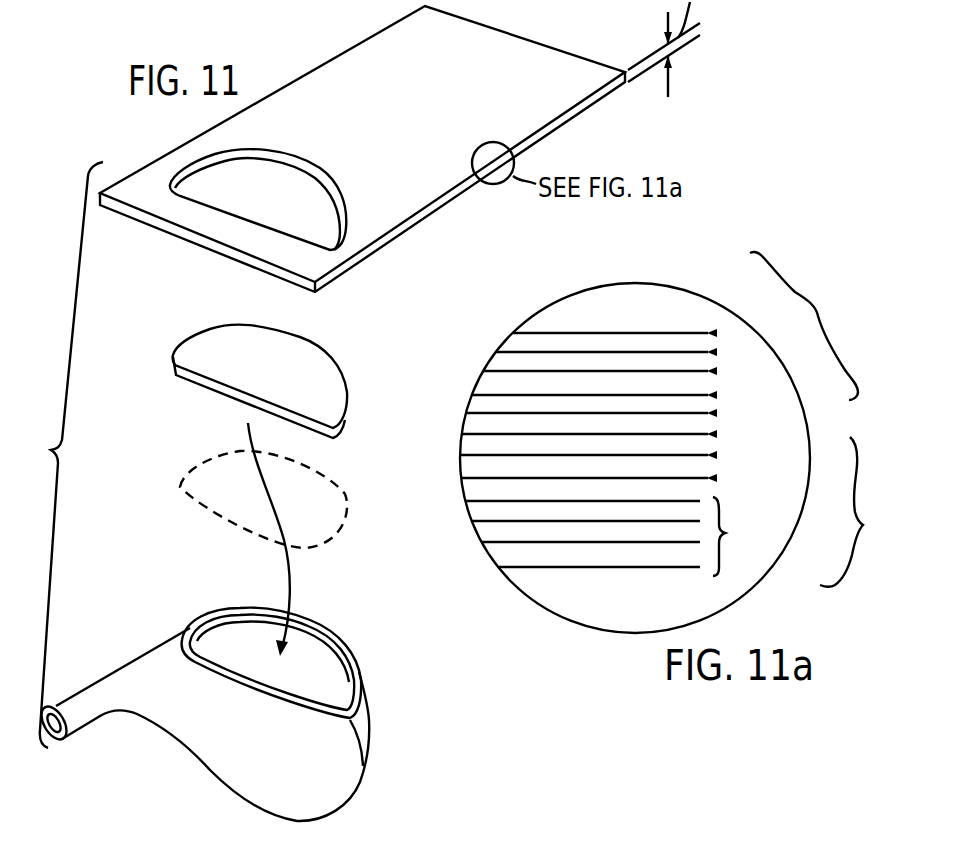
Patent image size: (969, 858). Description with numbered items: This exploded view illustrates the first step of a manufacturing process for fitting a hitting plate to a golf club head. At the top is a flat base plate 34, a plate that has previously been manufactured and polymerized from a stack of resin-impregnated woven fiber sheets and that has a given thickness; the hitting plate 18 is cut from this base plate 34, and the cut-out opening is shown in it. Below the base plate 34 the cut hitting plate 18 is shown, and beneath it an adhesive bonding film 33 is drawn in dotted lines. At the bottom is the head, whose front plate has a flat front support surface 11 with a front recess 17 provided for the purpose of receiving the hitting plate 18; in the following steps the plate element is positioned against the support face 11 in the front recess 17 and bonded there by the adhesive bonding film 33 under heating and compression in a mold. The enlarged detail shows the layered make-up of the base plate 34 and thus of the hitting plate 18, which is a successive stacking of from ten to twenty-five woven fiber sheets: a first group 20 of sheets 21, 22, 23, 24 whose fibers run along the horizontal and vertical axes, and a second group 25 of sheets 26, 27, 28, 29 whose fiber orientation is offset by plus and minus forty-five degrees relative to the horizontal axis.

In FIG. 11, the front support surface 11 is at (202, 655).
In FIG. 11, the front recess 17 is at (228, 627).
In FIG. 11, the hitting plate 18 is at (323, 372).
In FIG. 11a, the first group of sheets 20 is at (817, 298).
In FIG. 11a, the sheet 21 is at (714, 331).
In FIG. 11a, the sheet 22 is at (716, 351).
In FIG. 11a, the sheet 23 is at (716, 370).
In FIG. 11a, the sheet 24 is at (716, 395).
In FIG. 11a, the second group of sheets 25 is at (862, 538).
In FIG. 11a, the sheet 26 is at (714, 413).
In FIG. 11a, the sheet 27 is at (714, 434).
In FIG. 11a, the sheet 28 is at (714, 455).
In FIG. 11a, the sheet 29 is at (714, 478).
In FIG. 11, the adhesive bonding film 33 is at (343, 510).
In FIG. 11, the flat base plate 34 is at (483, 37).